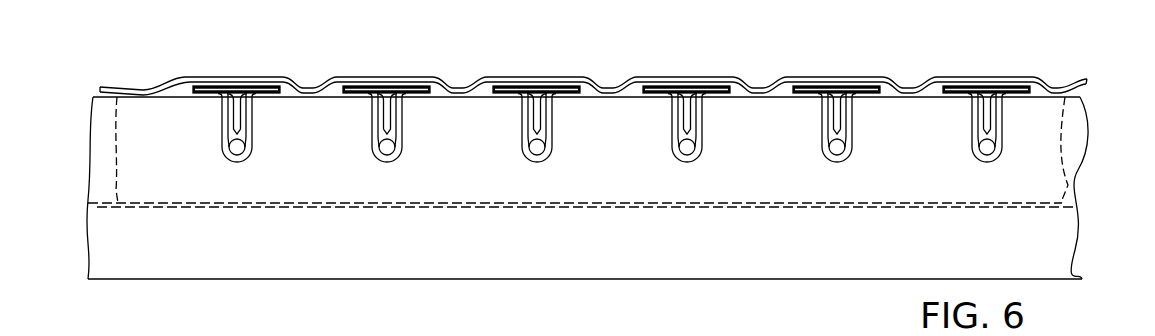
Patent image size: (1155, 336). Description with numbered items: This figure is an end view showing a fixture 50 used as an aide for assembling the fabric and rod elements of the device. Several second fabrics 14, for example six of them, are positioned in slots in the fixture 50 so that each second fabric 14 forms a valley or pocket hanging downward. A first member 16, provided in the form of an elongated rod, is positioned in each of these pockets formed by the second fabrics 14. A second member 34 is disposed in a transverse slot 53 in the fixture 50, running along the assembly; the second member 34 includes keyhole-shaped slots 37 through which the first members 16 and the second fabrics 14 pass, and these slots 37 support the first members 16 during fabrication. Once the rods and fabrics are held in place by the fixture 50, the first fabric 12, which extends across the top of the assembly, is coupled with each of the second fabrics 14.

The first fabric 12 is at (965, 77).
The second fabric 14 is at (1038, 100).
The first member 16 is at (1001, 156).
The second member 34 is at (585, 204).
The slot 37 is at (228, 121).
The fixture 50 is at (1053, 235).
The transverse slot 53 is at (92, 192).